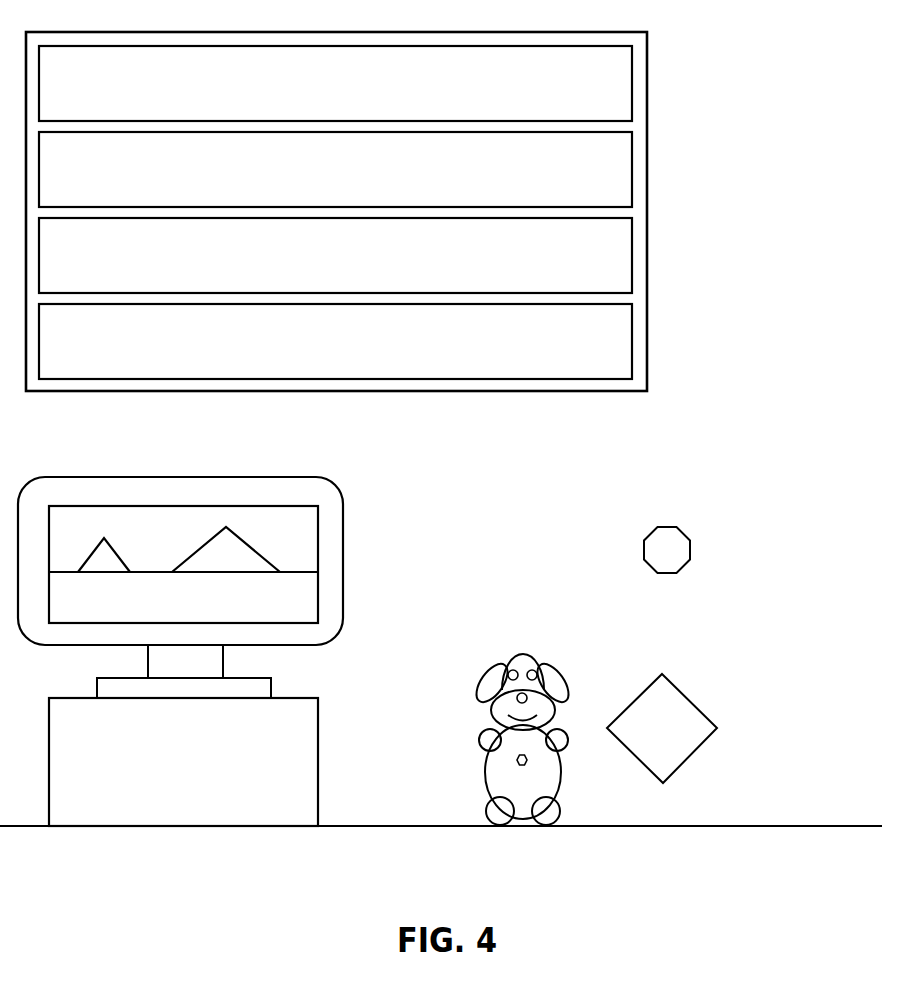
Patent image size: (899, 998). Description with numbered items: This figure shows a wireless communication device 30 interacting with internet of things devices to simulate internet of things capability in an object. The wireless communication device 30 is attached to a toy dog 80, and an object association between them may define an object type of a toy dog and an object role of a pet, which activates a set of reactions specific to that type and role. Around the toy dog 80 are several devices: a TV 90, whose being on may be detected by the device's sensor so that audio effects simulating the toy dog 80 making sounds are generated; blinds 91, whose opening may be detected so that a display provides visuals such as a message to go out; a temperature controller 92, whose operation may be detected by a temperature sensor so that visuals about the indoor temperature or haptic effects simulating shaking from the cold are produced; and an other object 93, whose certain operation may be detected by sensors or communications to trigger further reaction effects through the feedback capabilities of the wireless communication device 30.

The blinds 91 is at (670, 65).
The TV 90 is at (343, 681).
The toy dog 80 is at (500, 654).
The wireless communication device 30 is at (530, 766).
The temperature controller 92 is at (684, 518).
The other object 93 is at (694, 687).